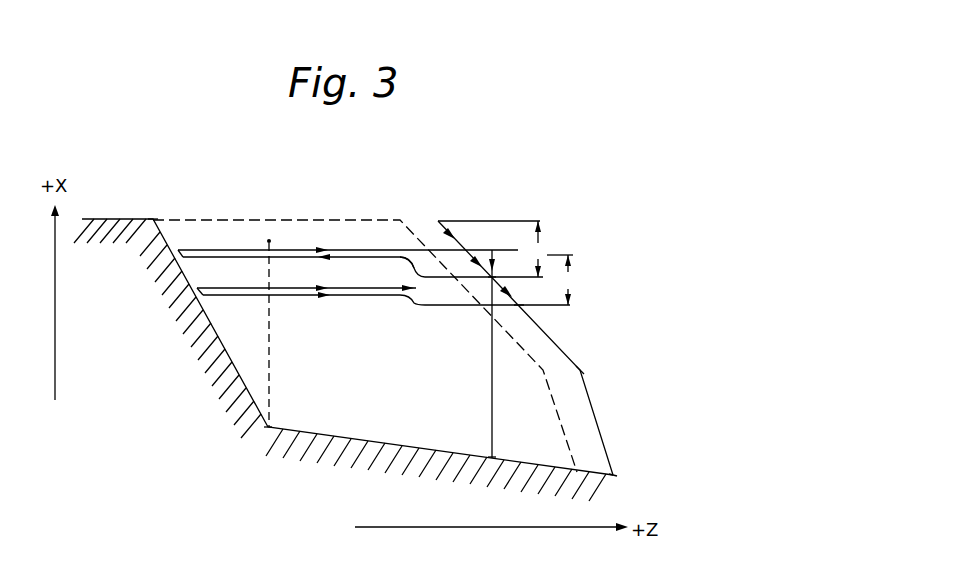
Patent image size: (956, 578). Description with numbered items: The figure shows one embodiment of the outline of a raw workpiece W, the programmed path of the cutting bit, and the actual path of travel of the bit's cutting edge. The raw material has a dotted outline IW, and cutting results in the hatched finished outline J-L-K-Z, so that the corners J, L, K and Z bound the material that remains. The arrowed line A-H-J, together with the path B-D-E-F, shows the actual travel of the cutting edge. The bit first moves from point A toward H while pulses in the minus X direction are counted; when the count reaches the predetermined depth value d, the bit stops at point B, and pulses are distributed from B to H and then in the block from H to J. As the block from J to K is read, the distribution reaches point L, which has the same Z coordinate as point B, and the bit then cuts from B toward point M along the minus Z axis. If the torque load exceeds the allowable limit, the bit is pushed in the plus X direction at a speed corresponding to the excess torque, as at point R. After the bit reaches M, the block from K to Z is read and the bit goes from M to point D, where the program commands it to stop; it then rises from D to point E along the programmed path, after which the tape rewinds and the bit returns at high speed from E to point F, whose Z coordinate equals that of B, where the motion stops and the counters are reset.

The raw workpiece W is at (243, 383).
The dotted outline of raw material IW is at (283, 219).
The point Z is at (151, 205).
The point E is at (356, 250).
The point D is at (376, 281).
The point R is at (407, 260).
The point M is at (278, 333).
The point A is at (522, 335).
The point F is at (490, 342).
The point B is at (498, 268).
The point G is at (523, 300).
The predetermined value d is at (552, 263).
The point H is at (585, 360).
The point J is at (614, 488).
The point L is at (490, 472).
The point K is at (264, 441).